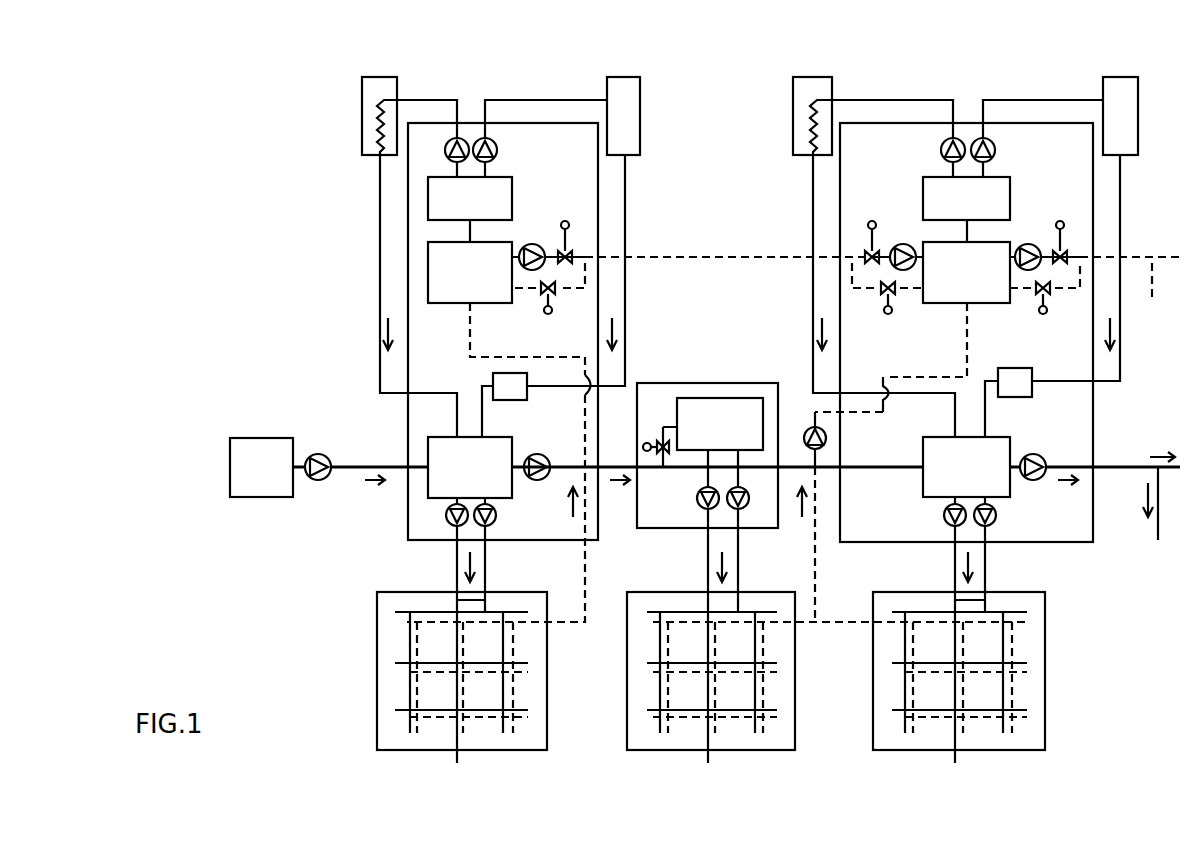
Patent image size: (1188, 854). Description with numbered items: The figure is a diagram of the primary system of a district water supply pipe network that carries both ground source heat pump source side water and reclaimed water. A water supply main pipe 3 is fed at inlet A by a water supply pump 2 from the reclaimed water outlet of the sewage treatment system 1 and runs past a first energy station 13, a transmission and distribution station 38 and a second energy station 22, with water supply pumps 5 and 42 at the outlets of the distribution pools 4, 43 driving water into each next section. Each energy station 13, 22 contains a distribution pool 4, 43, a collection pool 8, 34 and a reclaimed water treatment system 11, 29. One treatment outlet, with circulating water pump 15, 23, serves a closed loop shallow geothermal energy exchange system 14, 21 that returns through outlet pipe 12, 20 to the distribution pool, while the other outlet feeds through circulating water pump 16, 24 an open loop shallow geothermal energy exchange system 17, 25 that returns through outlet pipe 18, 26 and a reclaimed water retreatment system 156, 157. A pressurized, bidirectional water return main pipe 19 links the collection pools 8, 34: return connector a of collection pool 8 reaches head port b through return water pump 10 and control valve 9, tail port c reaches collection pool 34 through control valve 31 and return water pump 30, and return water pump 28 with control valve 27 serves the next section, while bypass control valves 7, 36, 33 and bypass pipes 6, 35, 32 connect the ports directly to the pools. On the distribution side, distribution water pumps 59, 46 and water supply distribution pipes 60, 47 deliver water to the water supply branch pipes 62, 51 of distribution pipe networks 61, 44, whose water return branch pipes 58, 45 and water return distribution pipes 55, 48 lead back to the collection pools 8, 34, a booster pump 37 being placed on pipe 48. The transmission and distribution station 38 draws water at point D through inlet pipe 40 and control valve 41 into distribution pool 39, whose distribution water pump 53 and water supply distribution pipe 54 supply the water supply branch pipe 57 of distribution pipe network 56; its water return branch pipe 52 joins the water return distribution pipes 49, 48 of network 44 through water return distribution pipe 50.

The sewage treatment system 1 is at (258, 438).
The water supply pump for water supply main pipe 2 is at (310, 455).
The water supply main pipe 3 is at (345, 465).
The distribution pool of energy station 4 is at (427, 452).
The water supply pump for water supply main pipe 5 is at (545, 453).
The bypass pipe for water return main pipe 6 is at (578, 290).
The bypass control valve for water return main pipe 7 is at (548, 296).
The energy station collection pool 8 is at (457, 305).
The control valve for water return main pipe 9 is at (566, 221).
The return water pump for water return main pipe 10 is at (530, 244).
The reclaimed water treatment system 11 is at (505, 177).
The outlet pipe of shallow geothermal energy exchange system 12 is at (378, 290).
The energy station 13 is at (407, 277).
The closed loop shallow geothermal energy exchange system 14 is at (372, 77).
The circulating water pump for heat exchange system 15 is at (455, 138).
The circulating water pump for heat exchange system 16 is at (482, 138).
The open loop shallow geothermal energy exchange system 17 is at (618, 77).
The outlet pipe of shallow geothermal energy exchange system 18 is at (628, 218).
The water return main pipe 19 is at (663, 257).
The outlet pipe of shallow geothermal energy exchange system 20 is at (808, 218).
The closed loop shallow geothermal energy exchange system 21 is at (808, 77).
The energy station 22 is at (873, 123).
The circulating water pump for heat exchange system 23 is at (950, 138).
The circulating water pump for heat exchange system 24 is at (980, 138).
The open loop shallow geothermal energy exchange system 25 is at (1112, 77).
The outlet pipe of shallow geothermal energy exchange system 26 is at (1120, 230).
The control valve for water return main pipe 27 is at (1060, 221).
The return water pump for water return main pipe 28 is at (1025, 244).
The reclaimed water treatment system 29 is at (997, 177).
The return water pump for water return main pipe 30 is at (905, 244).
The control valve for water return main pipe 31 is at (873, 221).
The bypass pipe for water return main pipe 32 is at (1075, 293).
The bypass control valve for water return main pipe 33 is at (1037, 293).
The energy station collection pool 34 is at (948, 305).
The bypass pipe for water return main pipe 35 is at (917, 293).
The bypass control valve for water return main pipe 36 is at (888, 317).
The booster pump for water return pipeline 37 is at (810, 427).
The transmission and distribution station 38 is at (733, 383).
The distribution pool of transmission and distribution station 39 is at (707, 398).
The inlet pipe of transmission and distribution station 40 is at (667, 437).
The control valve of transmission and distribution station 41 is at (648, 440).
The water supply pump for water supply main pipe 42 is at (1043, 453).
The distribution pool of energy station 43 is at (923, 448).
The distribution pipe network 44 is at (1045, 625).
The water return branch pipe of distribution pipe network 45 is at (1008, 642).
The distribution water pump 46 is at (990, 527).
The water supply distribution pipe of distribution pipe network 47 is at (955, 552).
The water return distribution pipe of distribution pipe network 48 is at (818, 602).
The water return distribution pipe of distribution pipe network 49 is at (857, 623).
The water return distribution pipe of distribution pipe network 50 is at (785, 623).
The water supply branch pipe of distribution pipe network 51 is at (905, 676).
The water return branch pipe of distribution pipe network 52 is at (763, 690).
The distribution water pump 53 is at (742, 510).
The water supply distribution pipe of distribution pipe network 54 is at (708, 552).
The water return distribution pipe of distribution pipe network 55 is at (532, 622).
The distribution pipe network 56 is at (628, 655).
The water supply branch pipe of distribution pipe network 57 is at (655, 681).
The water return branch pipe of distribution pipe network 58 is at (513, 693).
The distribution water pump 59 is at (497, 524).
The water supply distribution pipe of distribution pipe network 60 is at (455, 552).
The distribution pipe network 61 is at (374, 630).
The water supply branch pipe of distribution pipe network 62 is at (410, 642).
The reclaimed water retreatment system 156 is at (505, 400).
The reclaimed water retreatment system 157 is at (1008, 397).